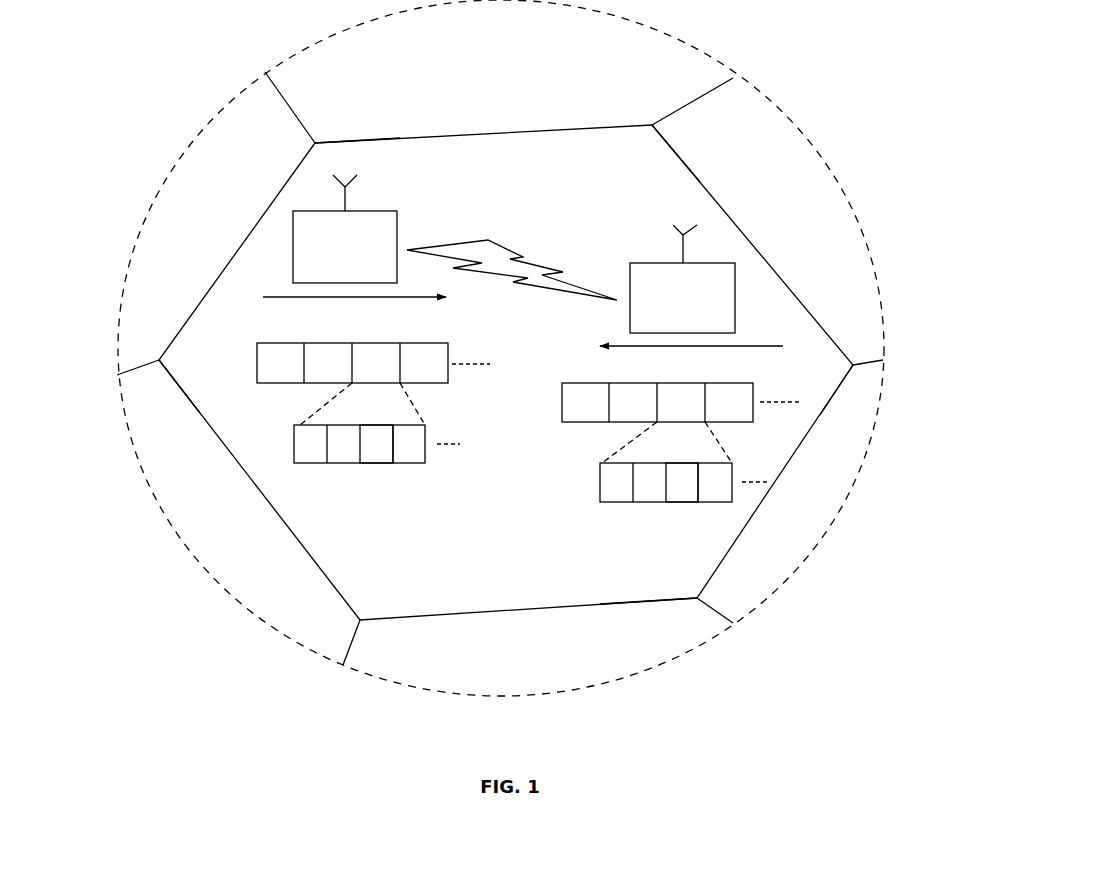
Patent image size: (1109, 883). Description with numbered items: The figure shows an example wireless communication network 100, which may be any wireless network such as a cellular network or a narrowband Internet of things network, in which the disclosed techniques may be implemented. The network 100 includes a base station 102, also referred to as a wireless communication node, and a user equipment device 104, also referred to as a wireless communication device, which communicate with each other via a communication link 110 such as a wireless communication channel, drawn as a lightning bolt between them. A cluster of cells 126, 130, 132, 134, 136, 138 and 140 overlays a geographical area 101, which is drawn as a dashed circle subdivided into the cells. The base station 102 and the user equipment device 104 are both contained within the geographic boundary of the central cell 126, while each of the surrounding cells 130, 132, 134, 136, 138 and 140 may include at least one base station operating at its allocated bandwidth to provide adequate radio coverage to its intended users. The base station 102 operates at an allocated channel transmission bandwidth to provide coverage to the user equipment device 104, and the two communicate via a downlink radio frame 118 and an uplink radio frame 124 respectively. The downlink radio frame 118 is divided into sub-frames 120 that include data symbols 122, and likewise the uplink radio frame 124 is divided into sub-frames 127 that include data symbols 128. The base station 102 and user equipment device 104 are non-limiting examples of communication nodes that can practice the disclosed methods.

The wireless communication network 100 is at (905, 112).
The geographical area 101 is at (130, 228).
The base station 102 is at (329, 272).
The user equipment device 104 is at (667, 324).
The communication link 110 is at (500, 247).
The downlink radio frame 118 is at (256, 358).
The sub-frame 120 is at (294, 452).
The data symbol 122 is at (378, 458).
The uplink radio frame 124 is at (562, 403).
The cell 126 is at (507, 583).
The sub-frame 127 is at (600, 492).
The data symbol 128 is at (685, 498).
The cell 130 is at (181, 227).
The cell 132 is at (487, 85).
The cell 134 is at (772, 223).
The cell 136 is at (786, 520).
The cell 138 is at (522, 660).
The cell 140 is at (201, 530).